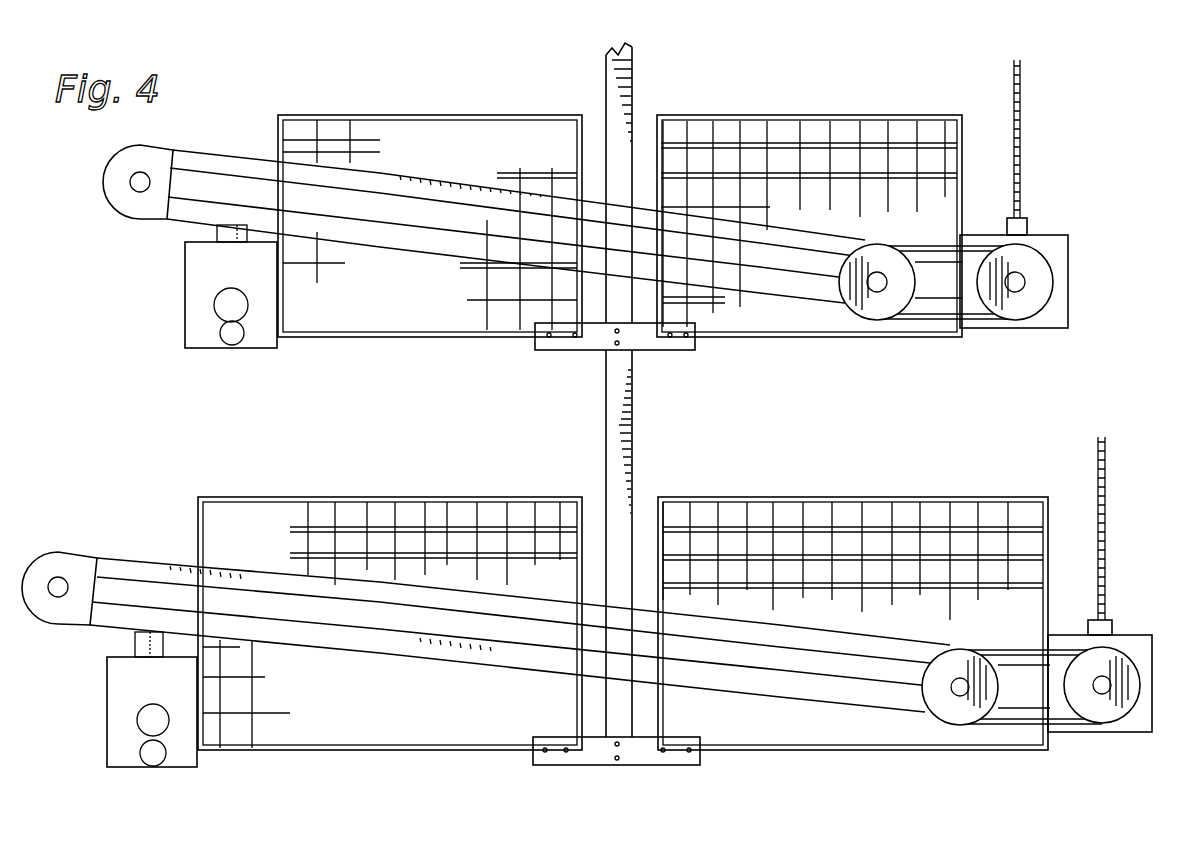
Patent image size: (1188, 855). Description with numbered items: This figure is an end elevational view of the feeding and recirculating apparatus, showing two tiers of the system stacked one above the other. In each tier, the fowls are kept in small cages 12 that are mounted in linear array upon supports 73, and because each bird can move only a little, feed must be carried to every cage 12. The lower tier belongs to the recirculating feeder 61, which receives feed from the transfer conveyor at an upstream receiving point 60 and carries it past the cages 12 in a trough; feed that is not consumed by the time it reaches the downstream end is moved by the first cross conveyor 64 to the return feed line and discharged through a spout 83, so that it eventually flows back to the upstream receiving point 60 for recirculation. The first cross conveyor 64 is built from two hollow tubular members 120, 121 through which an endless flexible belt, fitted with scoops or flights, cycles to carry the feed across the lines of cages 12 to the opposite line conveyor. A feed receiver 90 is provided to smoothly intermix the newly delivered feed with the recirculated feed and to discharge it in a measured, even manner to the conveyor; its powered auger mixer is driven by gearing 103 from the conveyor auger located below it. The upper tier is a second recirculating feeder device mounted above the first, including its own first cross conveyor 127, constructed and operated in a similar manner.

The cage 12 is at (440, 115).
The support 73 is at (610, 70).
The spout 83 is at (216, 233).
The feed receiver 90 is at (184, 297).
The gearing 103 is at (232, 338).
The first cross conveyor 127 is at (815, 290).
The first cross conveyor 64 is at (520, 676).
The hollow tubular member 120 is at (840, 655).
The hollow tubular member 121 is at (900, 695).
The upstream receiving point 60 is at (1112, 624).
The recirculating feeder 61 is at (1100, 736).